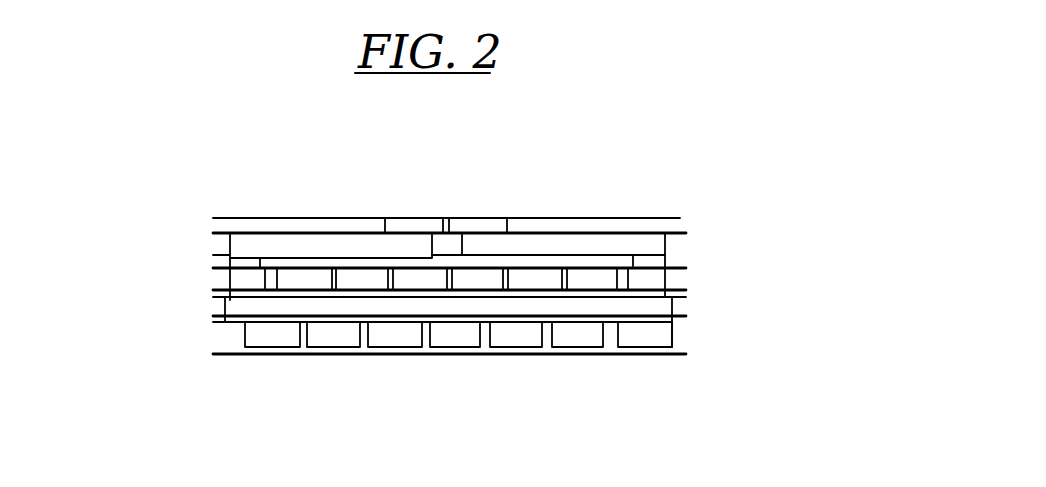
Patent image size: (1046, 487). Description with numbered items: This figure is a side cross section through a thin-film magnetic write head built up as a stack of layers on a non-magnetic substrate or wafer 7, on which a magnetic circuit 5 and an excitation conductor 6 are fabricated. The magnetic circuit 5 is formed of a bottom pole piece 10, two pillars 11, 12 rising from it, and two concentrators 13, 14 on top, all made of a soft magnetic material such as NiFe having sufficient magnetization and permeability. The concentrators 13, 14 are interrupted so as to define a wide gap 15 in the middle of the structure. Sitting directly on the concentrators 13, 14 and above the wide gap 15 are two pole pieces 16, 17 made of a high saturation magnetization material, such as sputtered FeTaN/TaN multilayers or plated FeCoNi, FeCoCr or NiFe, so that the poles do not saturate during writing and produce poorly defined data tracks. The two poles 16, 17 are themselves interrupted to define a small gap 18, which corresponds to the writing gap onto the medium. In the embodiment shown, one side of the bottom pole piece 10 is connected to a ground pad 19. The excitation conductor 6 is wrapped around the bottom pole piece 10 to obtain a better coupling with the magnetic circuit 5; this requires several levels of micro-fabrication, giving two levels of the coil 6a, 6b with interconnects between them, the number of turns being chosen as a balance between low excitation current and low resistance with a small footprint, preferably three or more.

The magnetic circuit 5 is at (225, 307).
The excitation conductor 6 is at (300, 277).
The first level of the coil 6a is at (525, 333).
The second level of the coil 6b is at (545, 277).
The non-magnetic substrate 7 is at (240, 394).
The bottom pole piece 10 is at (633, 303).
The pillar 11 is at (247, 280).
The pillar 12 is at (653, 277).
The concentrator 13 is at (248, 247).
The concentrator 14 is at (653, 245).
The wide gap 15 is at (450, 247).
The pole piece 16 is at (410, 223).
The pole piece 17 is at (478, 223).
The small gap 18 is at (447, 228).
The ground pad 19 is at (658, 347).